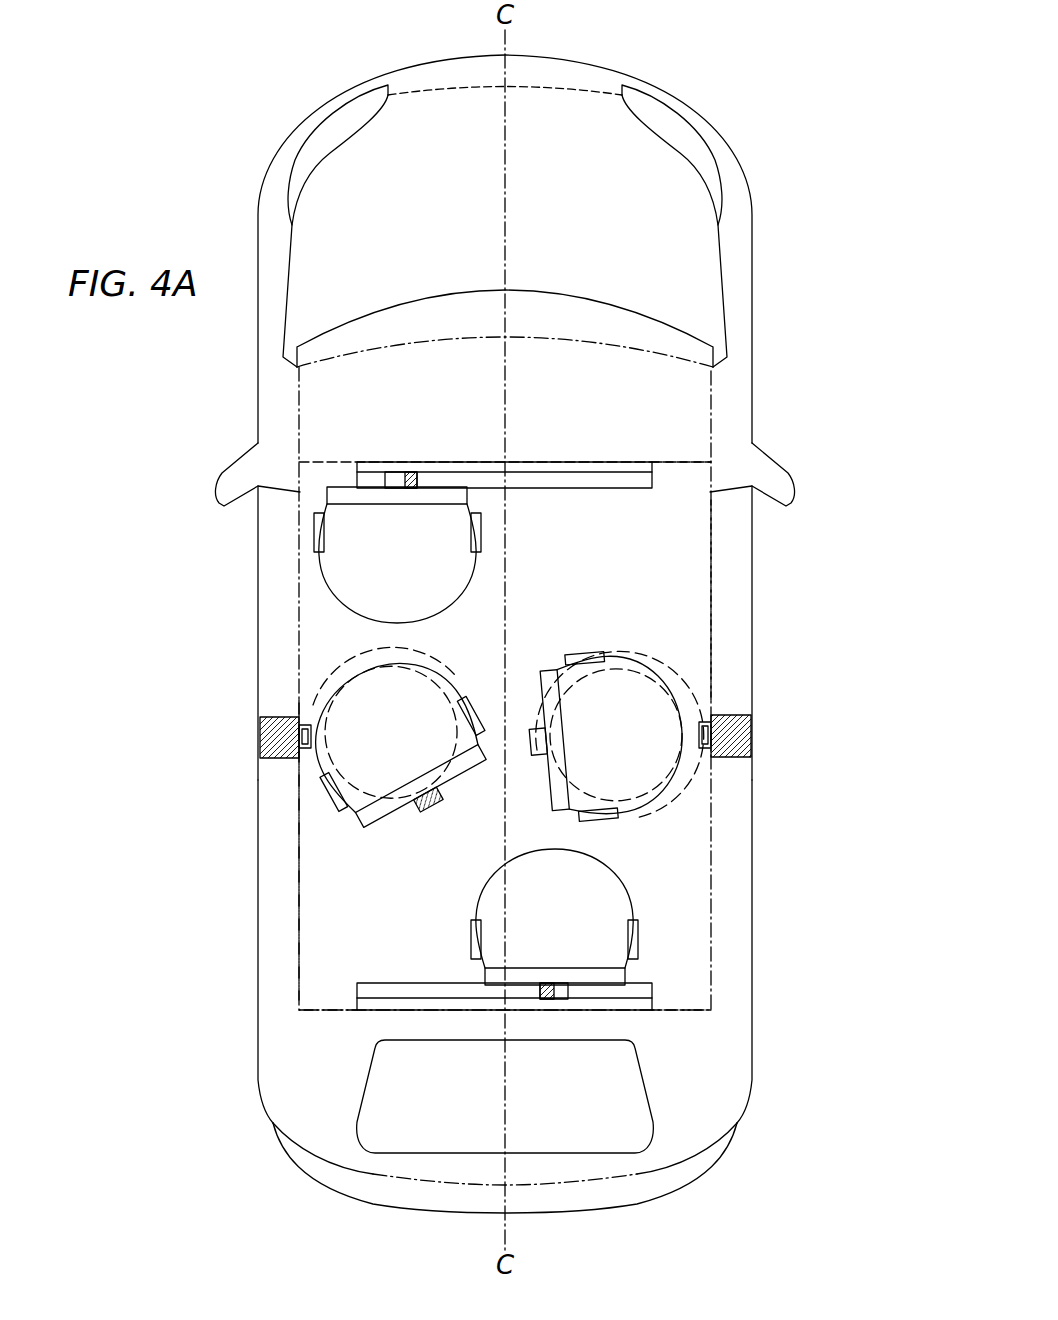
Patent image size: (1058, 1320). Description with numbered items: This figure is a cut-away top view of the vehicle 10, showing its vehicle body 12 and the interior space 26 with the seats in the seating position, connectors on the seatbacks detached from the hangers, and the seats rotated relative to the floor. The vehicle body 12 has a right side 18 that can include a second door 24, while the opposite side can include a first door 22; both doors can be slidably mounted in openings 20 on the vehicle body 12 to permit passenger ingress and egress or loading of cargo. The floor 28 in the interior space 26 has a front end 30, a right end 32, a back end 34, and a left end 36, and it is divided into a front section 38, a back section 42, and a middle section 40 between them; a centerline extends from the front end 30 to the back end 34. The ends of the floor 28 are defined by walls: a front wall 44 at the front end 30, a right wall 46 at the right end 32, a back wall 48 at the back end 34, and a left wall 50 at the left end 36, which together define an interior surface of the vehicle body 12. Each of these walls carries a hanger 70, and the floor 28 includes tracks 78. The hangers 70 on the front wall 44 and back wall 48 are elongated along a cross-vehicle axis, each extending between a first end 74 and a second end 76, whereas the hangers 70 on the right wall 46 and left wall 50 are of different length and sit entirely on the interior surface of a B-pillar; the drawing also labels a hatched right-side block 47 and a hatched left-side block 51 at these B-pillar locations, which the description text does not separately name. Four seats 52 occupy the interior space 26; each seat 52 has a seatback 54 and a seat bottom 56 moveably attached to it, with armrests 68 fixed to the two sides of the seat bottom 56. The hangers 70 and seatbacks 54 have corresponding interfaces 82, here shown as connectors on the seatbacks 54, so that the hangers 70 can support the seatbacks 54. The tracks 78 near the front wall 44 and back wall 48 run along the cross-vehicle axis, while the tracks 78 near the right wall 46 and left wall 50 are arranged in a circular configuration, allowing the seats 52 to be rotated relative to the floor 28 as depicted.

The vehicle 10 is at (815, 50).
The vehicle body 12 is at (400, 68).
The right side 18 is at (757, 878).
The openings 20 is at (257, 873).
The first door 22 is at (257, 565).
The second door 24 is at (755, 585).
The interior space 26 is at (527, 634).
The floor 28 is at (403, 880).
The front end 30 is at (669, 466).
The right end 32 is at (707, 553).
The back end 34 is at (333, 1013).
The left end 36 is at (300, 860).
The front section 38 is at (577, 548).
The middle section 40 is at (493, 692).
The back section 42 is at (353, 897).
The front wall 44 is at (688, 470).
The right wall 46 is at (698, 824).
The right door mount block 47 is at (750, 736).
The back wall 48 is at (680, 1003).
The left wall 50 is at (305, 948).
The left door mount block 51 is at (263, 736).
The seats 52 is at (480, 494).
The seatback 54 is at (450, 490).
The seat bottom 56 is at (382, 700).
The armrests 68 is at (316, 524).
The hangers 70 is at (598, 462).
The first end 74 is at (360, 468).
The second end 76 is at (650, 470).
The tracks 78 is at (622, 498).
The interfaces 82 is at (418, 476).